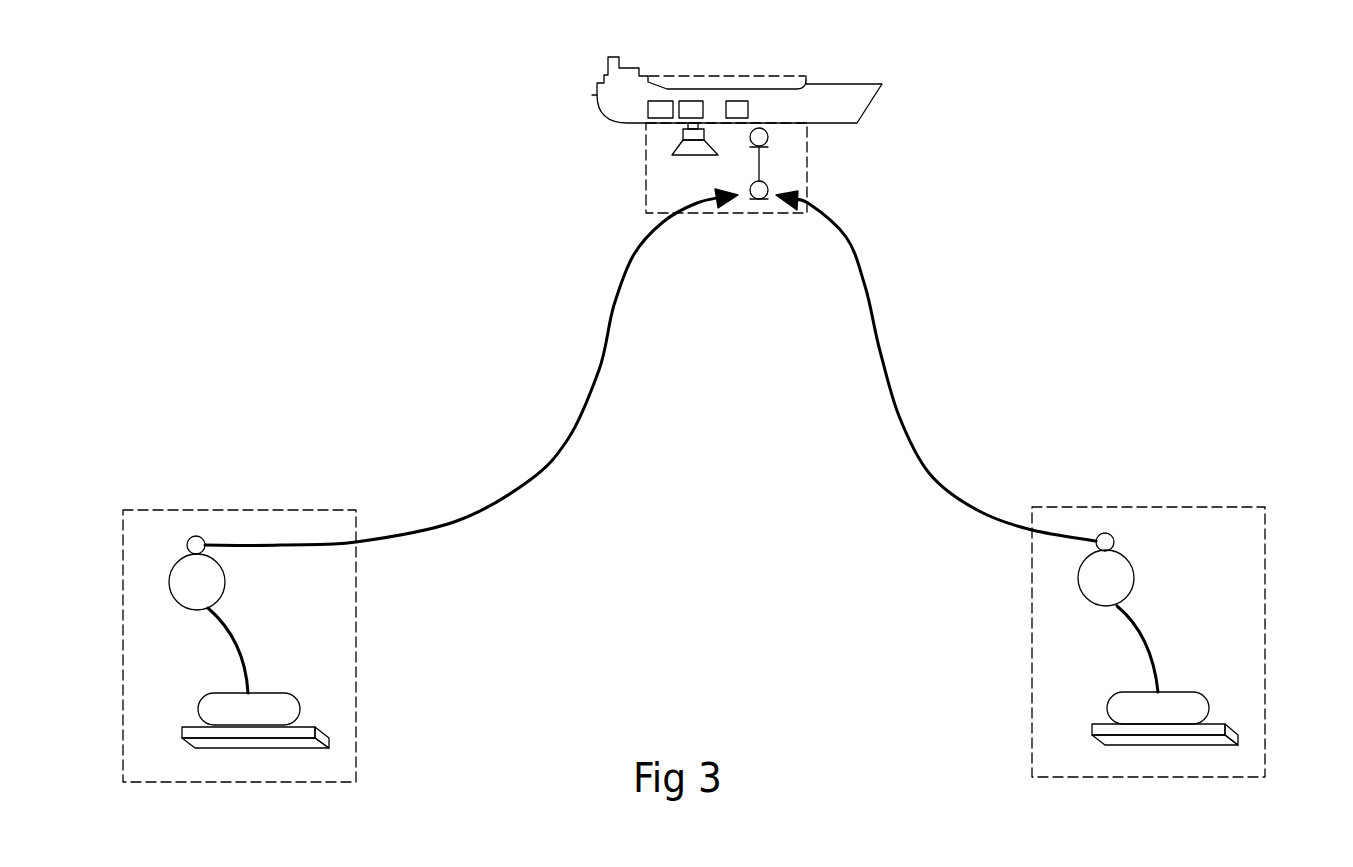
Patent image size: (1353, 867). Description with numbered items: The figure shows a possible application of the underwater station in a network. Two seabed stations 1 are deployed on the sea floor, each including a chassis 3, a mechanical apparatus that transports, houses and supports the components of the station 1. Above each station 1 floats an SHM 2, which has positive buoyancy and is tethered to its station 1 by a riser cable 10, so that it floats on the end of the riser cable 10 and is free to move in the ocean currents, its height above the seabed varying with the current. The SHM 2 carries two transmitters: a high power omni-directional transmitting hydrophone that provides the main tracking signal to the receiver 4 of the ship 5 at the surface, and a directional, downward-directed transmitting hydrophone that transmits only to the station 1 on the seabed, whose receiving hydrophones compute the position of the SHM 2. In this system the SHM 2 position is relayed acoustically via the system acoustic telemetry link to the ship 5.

The station 1 is at (357, 748).
The SHM 2 is at (170, 570).
The chassis 3 is at (193, 712).
The receiver 4 is at (808, 175).
The ship 5 is at (597, 90).
The riser cable 10 is at (227, 633).